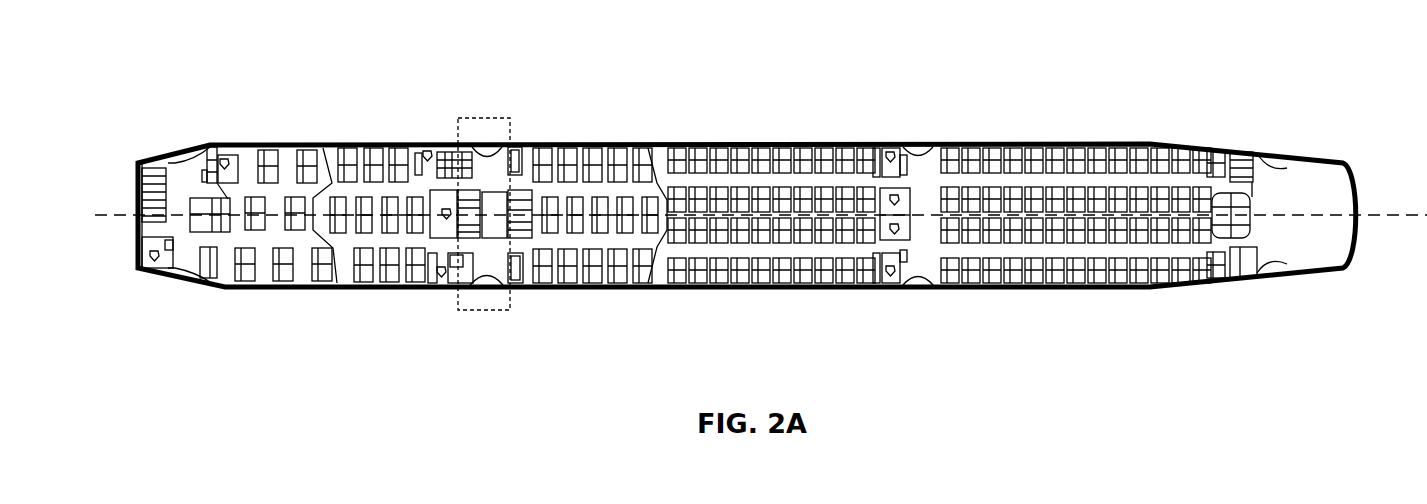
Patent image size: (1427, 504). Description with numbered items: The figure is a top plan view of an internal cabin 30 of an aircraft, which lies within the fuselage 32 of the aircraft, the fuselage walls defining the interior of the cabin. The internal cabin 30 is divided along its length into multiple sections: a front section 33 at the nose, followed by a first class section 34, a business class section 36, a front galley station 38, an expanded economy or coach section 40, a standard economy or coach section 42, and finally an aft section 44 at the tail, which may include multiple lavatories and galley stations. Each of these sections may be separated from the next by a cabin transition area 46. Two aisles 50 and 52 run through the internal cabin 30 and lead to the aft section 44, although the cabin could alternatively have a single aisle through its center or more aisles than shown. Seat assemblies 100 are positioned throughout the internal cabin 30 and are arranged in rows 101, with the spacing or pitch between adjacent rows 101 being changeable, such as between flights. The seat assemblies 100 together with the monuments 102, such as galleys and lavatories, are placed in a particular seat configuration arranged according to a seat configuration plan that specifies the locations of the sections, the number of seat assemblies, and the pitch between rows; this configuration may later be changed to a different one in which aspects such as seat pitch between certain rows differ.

The internal cabin 30 is at (277, 50).
The fuselage 32 is at (608, 108).
The front section 33 is at (197, 300).
The first class section 34 is at (290, 290).
The business class section 36 is at (363, 143).
The front galley station 38 is at (483, 302).
The expanded economy or coach section 40 is at (585, 288).
The standard economy or coach section 42 is at (714, 143).
The aft section 44 is at (1280, 170).
The cabin transition area 46 is at (209, 144).
The aisle 50 is at (1075, 182).
The aisle 52 is at (1093, 250).
The seat assembly 100 is at (838, 150).
The row 101 is at (835, 140).
The monument 102 is at (428, 147).